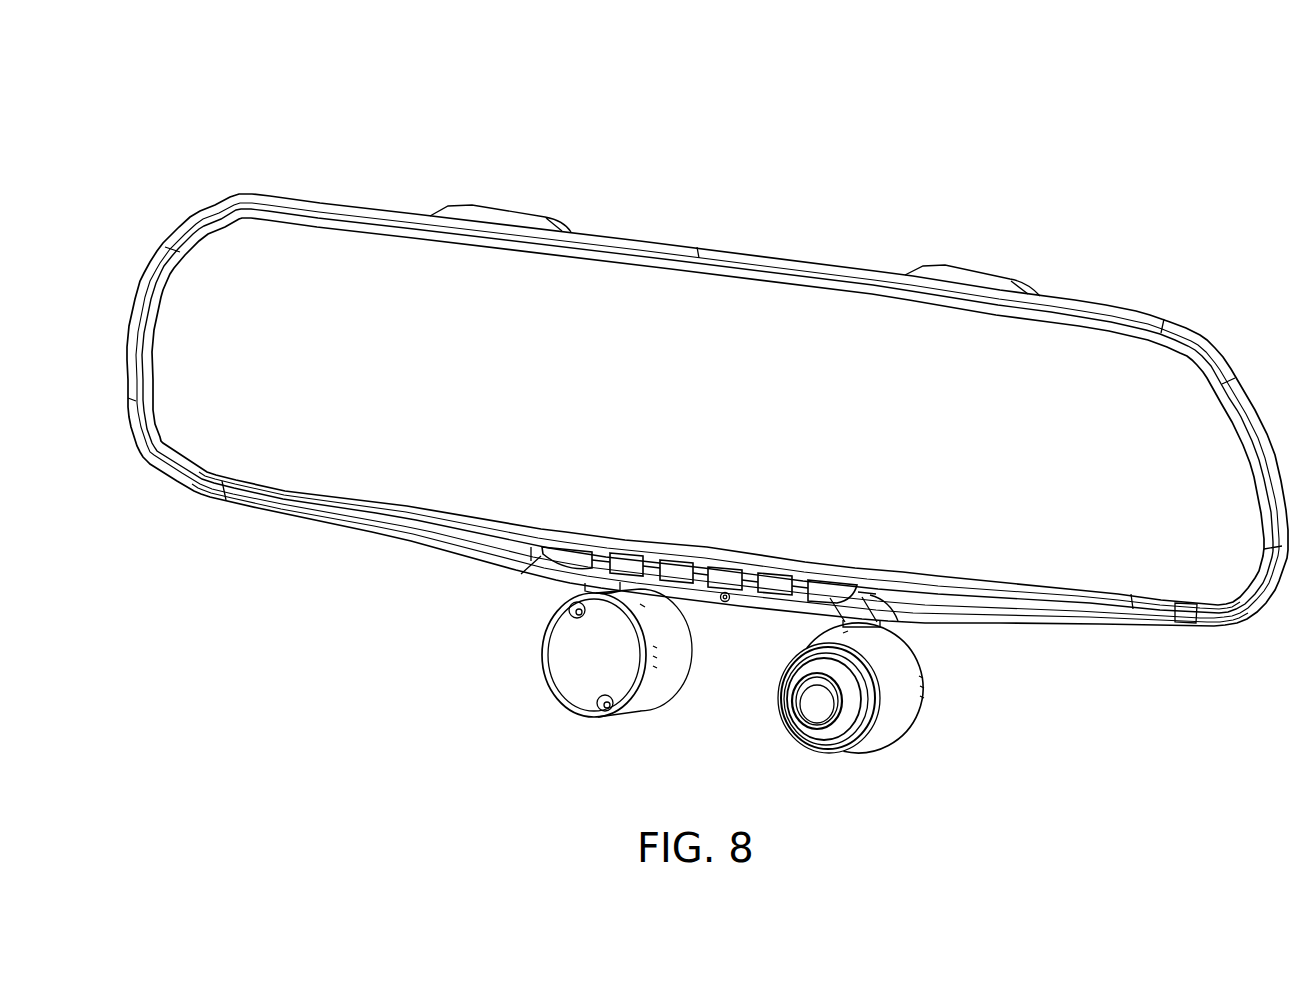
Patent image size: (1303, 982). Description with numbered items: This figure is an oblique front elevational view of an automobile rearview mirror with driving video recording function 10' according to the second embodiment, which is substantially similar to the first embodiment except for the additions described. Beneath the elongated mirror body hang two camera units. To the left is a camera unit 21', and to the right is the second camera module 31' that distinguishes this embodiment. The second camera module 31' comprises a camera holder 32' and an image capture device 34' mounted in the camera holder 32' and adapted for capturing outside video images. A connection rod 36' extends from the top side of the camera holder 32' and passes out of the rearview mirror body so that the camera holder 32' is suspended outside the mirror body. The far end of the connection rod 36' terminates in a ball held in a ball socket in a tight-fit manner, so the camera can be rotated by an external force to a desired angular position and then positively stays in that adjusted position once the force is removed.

The automobile rearview mirror with driving video recording function 10' is at (707, 338).
The first camera module 21' is at (566, 649).
The second camera module 31' is at (949, 706).
The camera holder 32' is at (938, 688).
The image capture device 34' is at (924, 716).
The connection rod 36' is at (809, 647).